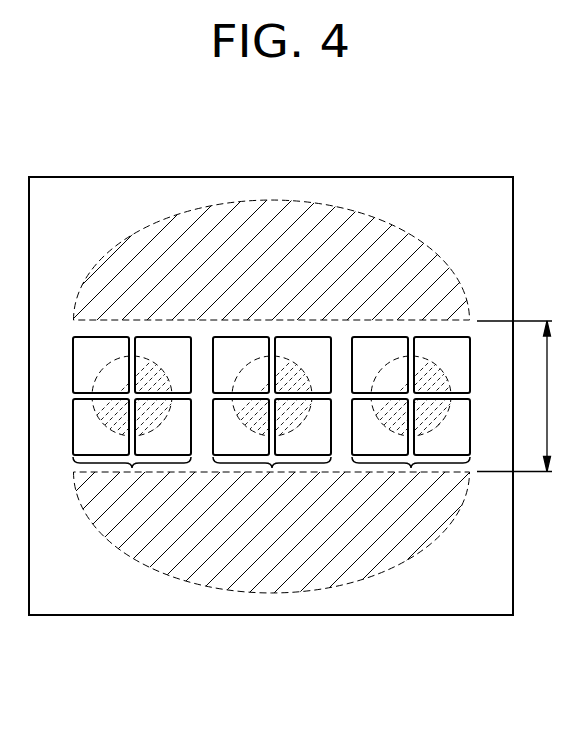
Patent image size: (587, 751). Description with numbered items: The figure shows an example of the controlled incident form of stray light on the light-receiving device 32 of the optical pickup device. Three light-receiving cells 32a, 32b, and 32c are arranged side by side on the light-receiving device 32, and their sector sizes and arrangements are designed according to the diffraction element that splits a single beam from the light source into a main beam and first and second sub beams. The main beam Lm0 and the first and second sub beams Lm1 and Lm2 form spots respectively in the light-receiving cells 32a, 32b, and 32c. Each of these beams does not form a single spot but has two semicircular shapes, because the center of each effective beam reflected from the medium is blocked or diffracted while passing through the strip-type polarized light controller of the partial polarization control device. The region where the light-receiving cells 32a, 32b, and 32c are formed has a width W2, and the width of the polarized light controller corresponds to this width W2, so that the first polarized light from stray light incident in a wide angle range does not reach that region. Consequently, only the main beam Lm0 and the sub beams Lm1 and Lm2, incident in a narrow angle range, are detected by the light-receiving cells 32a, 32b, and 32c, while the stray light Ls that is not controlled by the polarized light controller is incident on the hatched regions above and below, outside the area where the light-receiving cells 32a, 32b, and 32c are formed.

The light-receiving device 32 is at (500, 221).
The light-receiving cell 32a is at (272, 418).
The light-receiving cell 32b is at (132, 418).
The light-receiving cell 32c is at (411, 418).
The main beam Lm0 is at (257, 358).
The first sub beam Lm1 is at (117, 358).
The second sub beam Lm2 is at (396, 358).
The stray light Ls is at (462, 300).
The width of the region where the light-receiving cells are formed W2 is at (531, 396).